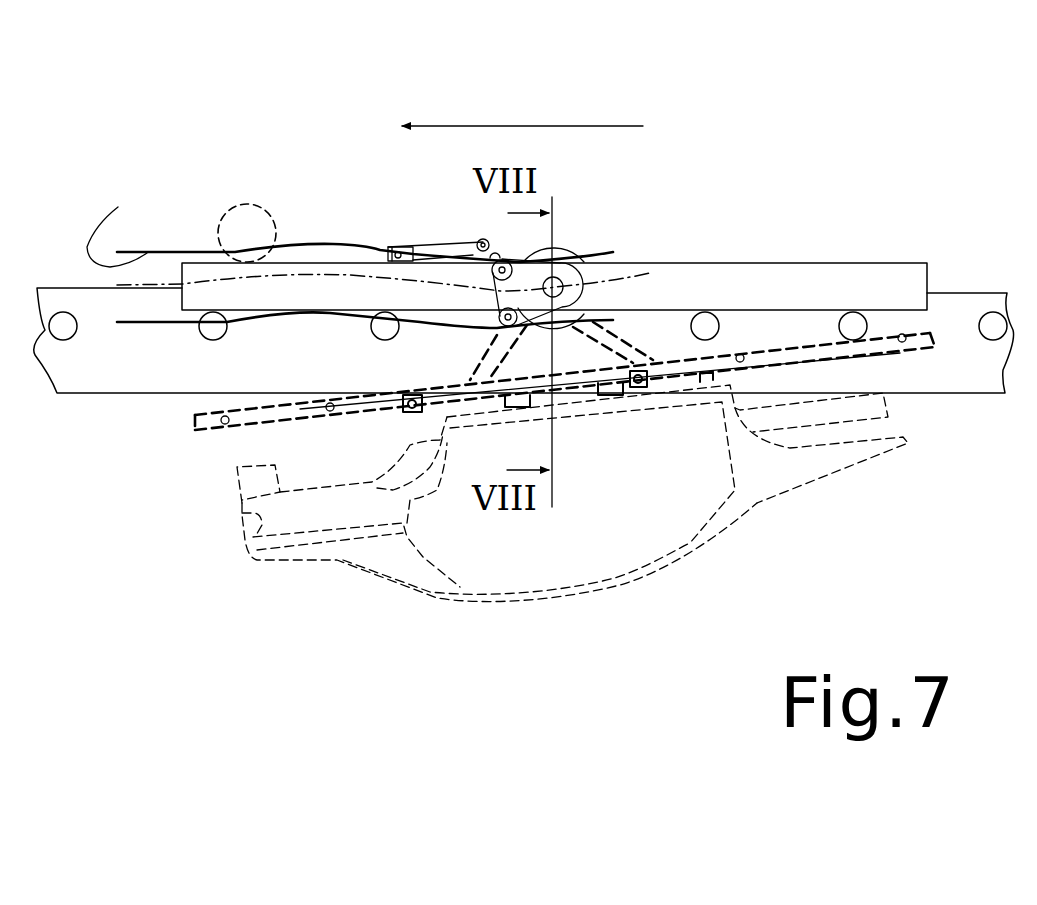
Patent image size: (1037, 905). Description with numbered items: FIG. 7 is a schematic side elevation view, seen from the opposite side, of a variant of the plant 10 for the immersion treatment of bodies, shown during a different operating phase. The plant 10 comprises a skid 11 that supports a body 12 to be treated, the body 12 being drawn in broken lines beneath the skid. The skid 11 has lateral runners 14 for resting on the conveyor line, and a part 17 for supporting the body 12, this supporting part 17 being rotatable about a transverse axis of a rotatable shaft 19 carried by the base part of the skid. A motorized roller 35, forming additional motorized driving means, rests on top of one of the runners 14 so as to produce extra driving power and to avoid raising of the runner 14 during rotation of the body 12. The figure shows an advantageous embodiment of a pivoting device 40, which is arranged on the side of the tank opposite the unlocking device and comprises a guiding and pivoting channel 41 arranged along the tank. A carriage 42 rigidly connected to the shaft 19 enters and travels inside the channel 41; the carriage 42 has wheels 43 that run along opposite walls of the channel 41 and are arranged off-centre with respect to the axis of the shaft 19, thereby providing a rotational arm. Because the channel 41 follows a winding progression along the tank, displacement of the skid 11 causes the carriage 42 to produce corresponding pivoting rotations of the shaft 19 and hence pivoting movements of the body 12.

The plant 10 is at (88, 105).
The skid 11 is at (723, 252).
The body 12 is at (337, 553).
The lateral runners 14 is at (820, 273).
The body supporting part 17 is at (227, 438).
The rotatable shaft 19 is at (565, 294).
The motorized drive rollers 35 is at (237, 207).
The device 40 is at (338, 240).
The guiding and pivoting channel 41 is at (123, 219).
The carriage 42 is at (568, 274).
The wheels 43 is at (513, 258).